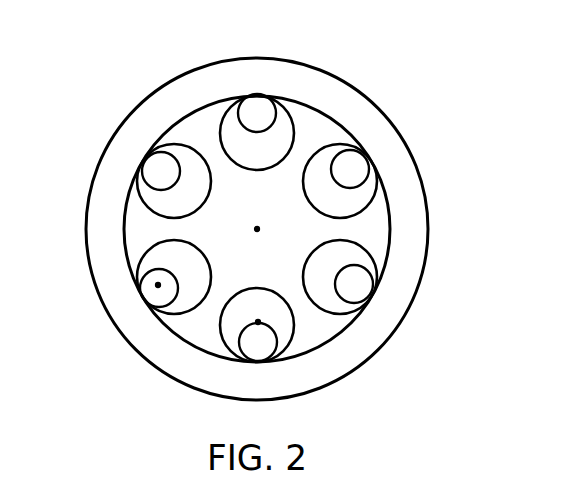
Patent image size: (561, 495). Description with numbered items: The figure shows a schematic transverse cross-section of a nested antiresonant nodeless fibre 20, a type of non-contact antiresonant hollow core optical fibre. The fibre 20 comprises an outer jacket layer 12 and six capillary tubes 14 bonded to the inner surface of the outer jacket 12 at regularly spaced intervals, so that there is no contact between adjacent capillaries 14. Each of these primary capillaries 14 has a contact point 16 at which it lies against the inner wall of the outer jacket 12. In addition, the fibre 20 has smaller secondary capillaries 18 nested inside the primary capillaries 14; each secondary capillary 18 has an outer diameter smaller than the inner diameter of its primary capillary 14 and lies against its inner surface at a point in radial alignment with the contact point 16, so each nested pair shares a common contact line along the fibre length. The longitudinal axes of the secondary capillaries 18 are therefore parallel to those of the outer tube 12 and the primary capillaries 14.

The nested antiresonant nodeless fibre 20 is at (117, 92).
The outer jacket layer 12 is at (105, 312).
The capillary tubes 14 is at (385, 207).
The contact point 16 is at (362, 266).
The secondary capillaries 18 is at (358, 162).